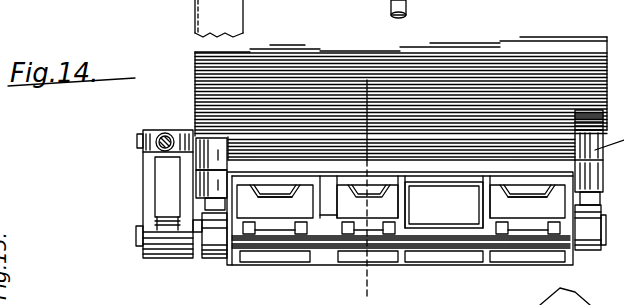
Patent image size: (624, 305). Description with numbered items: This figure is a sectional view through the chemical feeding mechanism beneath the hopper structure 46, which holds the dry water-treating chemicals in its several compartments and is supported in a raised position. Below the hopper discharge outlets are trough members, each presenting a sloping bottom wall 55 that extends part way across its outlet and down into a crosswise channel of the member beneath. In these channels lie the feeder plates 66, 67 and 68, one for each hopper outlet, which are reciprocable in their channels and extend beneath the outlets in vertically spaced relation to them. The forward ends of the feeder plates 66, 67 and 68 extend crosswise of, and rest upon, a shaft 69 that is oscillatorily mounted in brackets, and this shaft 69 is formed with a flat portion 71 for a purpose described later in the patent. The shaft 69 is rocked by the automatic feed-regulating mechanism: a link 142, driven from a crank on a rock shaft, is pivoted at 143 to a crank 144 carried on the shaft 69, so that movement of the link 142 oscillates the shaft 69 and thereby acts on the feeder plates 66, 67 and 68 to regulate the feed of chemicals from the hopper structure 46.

The hopper structure 46 is at (548, 62).
The bottom wall 55 is at (288, 190).
The feeder plate 66 is at (528, 220).
The feeder plate 67 is at (367, 232).
The feeder plate 68 is at (272, 222).
The shaft 69 is at (443, 240).
The flat portion 71 is at (448, 228).
The link 142 is at (165, 131).
The pivot 143 is at (137, 141).
The crank 144 is at (148, 190).